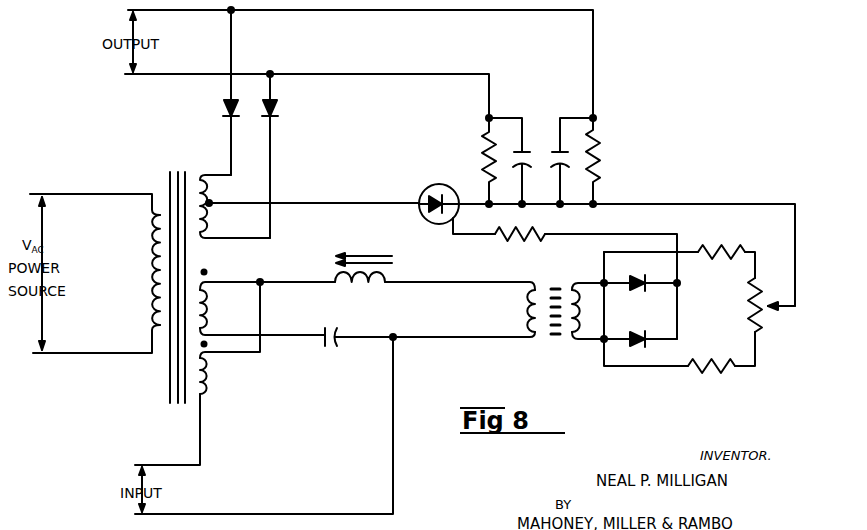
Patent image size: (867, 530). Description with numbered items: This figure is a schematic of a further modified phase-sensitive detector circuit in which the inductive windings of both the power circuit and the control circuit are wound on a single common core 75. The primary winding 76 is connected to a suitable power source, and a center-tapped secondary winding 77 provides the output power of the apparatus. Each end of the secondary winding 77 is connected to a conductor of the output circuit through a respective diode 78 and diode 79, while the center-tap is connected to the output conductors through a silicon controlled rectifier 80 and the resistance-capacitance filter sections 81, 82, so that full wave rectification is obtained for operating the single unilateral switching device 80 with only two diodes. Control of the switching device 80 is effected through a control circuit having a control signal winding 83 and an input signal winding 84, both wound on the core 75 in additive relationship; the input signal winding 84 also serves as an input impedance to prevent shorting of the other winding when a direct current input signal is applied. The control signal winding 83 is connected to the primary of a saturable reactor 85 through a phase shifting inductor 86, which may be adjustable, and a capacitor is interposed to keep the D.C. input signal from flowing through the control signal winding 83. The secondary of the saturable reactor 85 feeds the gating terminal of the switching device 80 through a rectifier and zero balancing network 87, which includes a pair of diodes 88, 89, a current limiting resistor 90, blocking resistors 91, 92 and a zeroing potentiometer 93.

The core 75 is at (168, 372).
The primary winding 76 is at (148, 238).
The center-tapped secondary winding 77 is at (214, 174).
The diode 78 is at (222, 108).
The diode 79 is at (282, 108).
The silicon controlled rectifier 80 is at (448, 190).
The resistance-capacitance filter section 81 is at (480, 149).
The resistance-capacitance filter section 82 is at (605, 167).
The control signal winding 83 is at (218, 282).
The input signal winding 84 is at (212, 376).
The saturable reactor 85 is at (562, 340).
The phase shifting inductor 86 is at (375, 286).
The rectifier and zero balancing network 87 is at (765, 330).
The diode 88 is at (637, 291).
The diode 89 is at (640, 316).
The current limiting resistor 90 is at (534, 242).
The blocking resistor 91 is at (706, 236).
The blocking resistor 92 is at (706, 370).
The zeroing potentiometer 93 is at (746, 305).